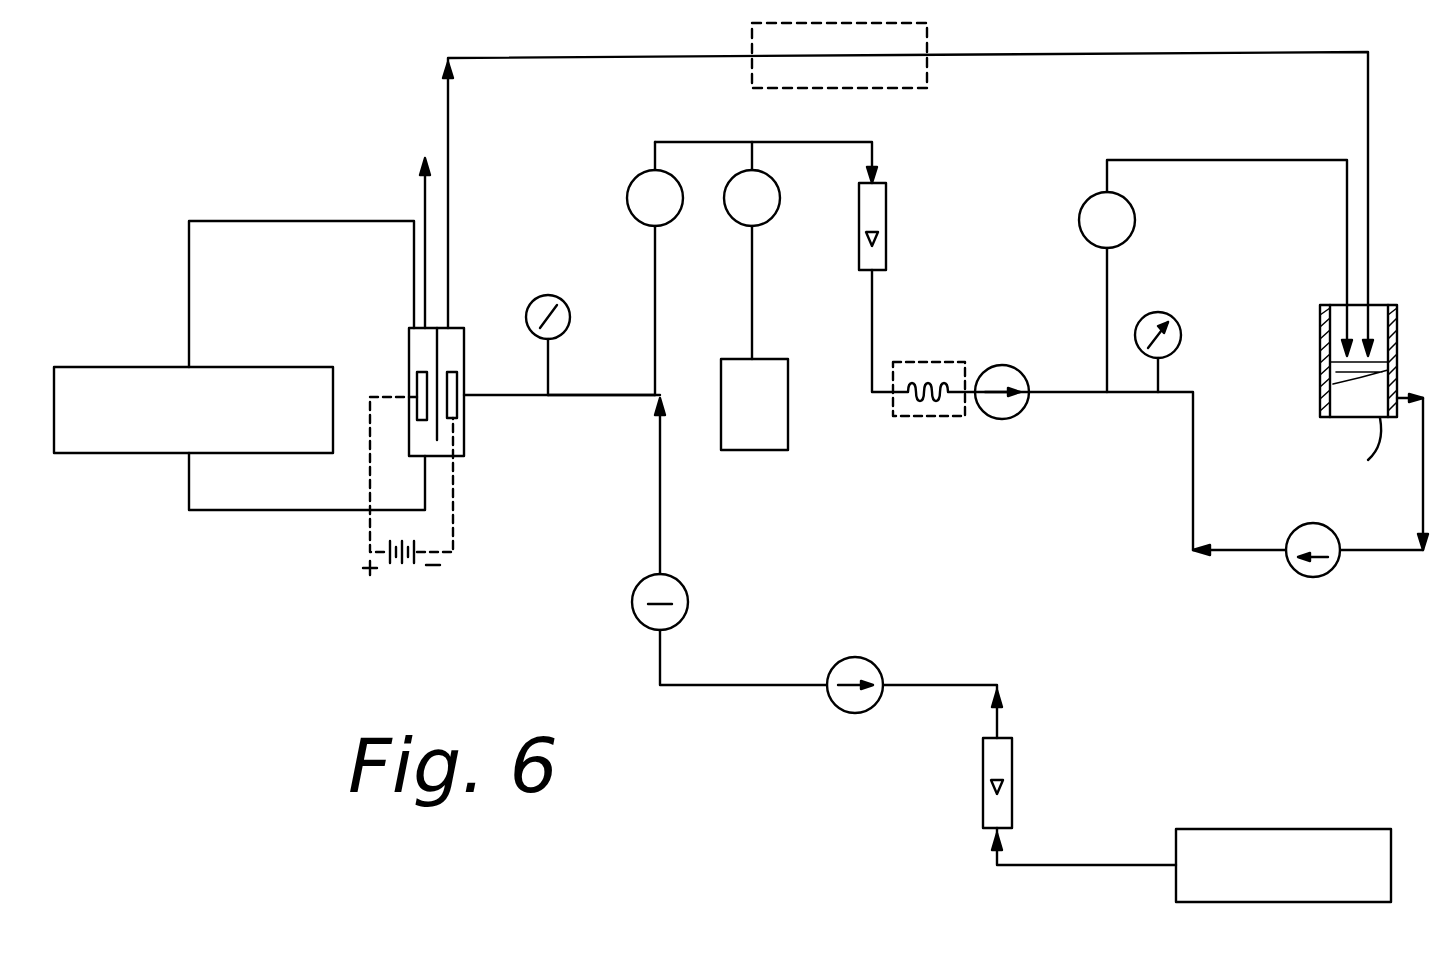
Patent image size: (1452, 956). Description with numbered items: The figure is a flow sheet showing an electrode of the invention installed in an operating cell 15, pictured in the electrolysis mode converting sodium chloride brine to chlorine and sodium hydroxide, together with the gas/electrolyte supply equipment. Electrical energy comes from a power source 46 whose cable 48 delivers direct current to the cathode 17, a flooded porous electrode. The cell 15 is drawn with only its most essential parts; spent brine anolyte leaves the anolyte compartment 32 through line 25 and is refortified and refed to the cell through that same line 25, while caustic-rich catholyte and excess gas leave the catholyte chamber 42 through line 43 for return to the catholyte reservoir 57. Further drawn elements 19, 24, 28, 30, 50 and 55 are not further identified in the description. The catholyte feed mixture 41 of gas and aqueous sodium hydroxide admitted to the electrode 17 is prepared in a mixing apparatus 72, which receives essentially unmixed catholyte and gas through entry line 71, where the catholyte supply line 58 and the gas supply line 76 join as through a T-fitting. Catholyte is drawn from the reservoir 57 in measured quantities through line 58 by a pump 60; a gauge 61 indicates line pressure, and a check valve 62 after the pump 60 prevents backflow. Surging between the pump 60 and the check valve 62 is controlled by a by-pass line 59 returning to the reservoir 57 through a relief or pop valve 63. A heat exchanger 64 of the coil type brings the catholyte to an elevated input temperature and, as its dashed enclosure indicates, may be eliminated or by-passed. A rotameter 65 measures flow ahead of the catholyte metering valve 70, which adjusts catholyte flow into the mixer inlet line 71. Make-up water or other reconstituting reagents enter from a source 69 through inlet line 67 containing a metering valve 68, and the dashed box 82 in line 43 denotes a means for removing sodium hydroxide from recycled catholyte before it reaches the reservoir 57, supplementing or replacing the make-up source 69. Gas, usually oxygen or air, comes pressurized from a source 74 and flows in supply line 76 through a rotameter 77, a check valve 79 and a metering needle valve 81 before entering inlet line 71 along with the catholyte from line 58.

The cell 15 is at (410, 440).
The cathode 17 is at (457, 410).
The anode 19 is at (417, 380).
The acrolyte return line 24 is at (187, 510).
The line 25 is at (253, 221).
The anode gas vent line 28 is at (422, 195).
The membrane 30 is at (440, 358).
The anolyte compartment 32 is at (415, 340).
The catholyte feed mixture 41 is at (545, 395).
The catholyte chamber 42 is at (464, 338).
The line 43 is at (448, 100).
The power source 46 is at (405, 568).
The cable 48 is at (453, 505).
The acrolyte feed and circulation system 50 is at (150, 453).
The electrolysis system 55 is at (330, 598).
The catholyte reservoir 57 is at (1320, 330).
The catholyte supply line 58 is at (697, 142).
The by-pass line 59 is at (1107, 275).
The pump 60 is at (1302, 577).
The gauge 61 is at (1165, 315).
The check valve 62 is at (1020, 375).
The relief valve 63 is at (1082, 207).
The heat exchanger 64 is at (930, 380).
The rotameter 65 is at (886, 205).
The inlet line 67 is at (752, 160).
The metering valve 68 is at (767, 215).
The source 69 is at (788, 412).
The catholyte metering valve 70 is at (630, 205).
The entry line 71 is at (597, 395).
The mixing apparatus 72 is at (549, 300).
The gas source 74 is at (1292, 838).
The gas supply line 76 is at (660, 480).
The rotameter 77 is at (1012, 757).
The check valve 79 is at (878, 665).
The metering valve 81 is at (632, 602).
The caustic removal means 82 is at (927, 78).